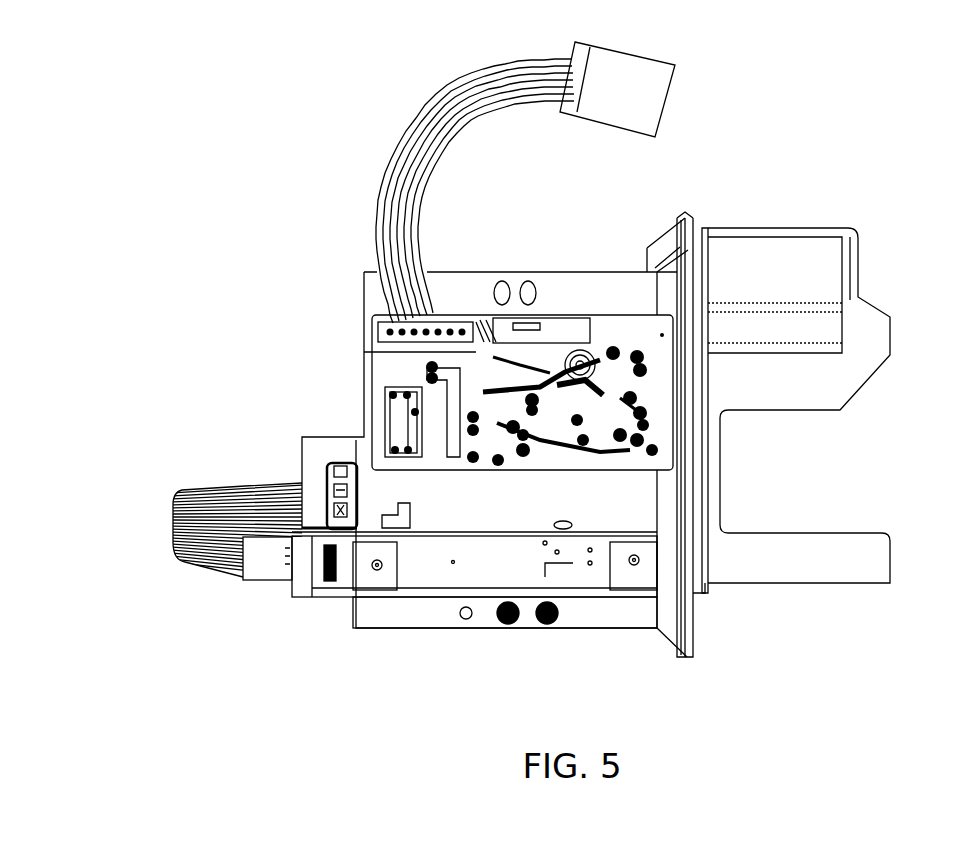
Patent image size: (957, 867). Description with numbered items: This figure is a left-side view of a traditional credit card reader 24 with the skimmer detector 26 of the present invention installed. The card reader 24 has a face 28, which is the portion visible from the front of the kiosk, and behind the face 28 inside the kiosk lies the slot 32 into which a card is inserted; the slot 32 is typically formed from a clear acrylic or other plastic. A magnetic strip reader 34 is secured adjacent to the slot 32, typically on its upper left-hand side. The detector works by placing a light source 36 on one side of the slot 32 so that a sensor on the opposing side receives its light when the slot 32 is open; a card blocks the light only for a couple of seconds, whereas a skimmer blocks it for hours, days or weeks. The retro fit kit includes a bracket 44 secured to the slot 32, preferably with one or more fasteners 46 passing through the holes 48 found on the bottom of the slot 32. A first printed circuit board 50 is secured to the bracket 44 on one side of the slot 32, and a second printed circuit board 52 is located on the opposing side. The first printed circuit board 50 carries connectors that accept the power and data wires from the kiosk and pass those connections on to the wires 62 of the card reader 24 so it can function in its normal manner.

The credit card reader 24 is at (628, 234).
The skimmer detector 26 is at (170, 460).
The face 28 is at (788, 223).
The slot 32 is at (362, 407).
The magnetic strip reader 34 is at (362, 352).
The light source 36 is at (573, 563).
The bracket 44 is at (337, 613).
The fasteners 46 is at (491, 629).
The holes 48 is at (513, 634).
The first printed circuit board 50 is at (300, 442).
The second printed circuit board 52 is at (285, 572).
The wires 62 is at (415, 118).